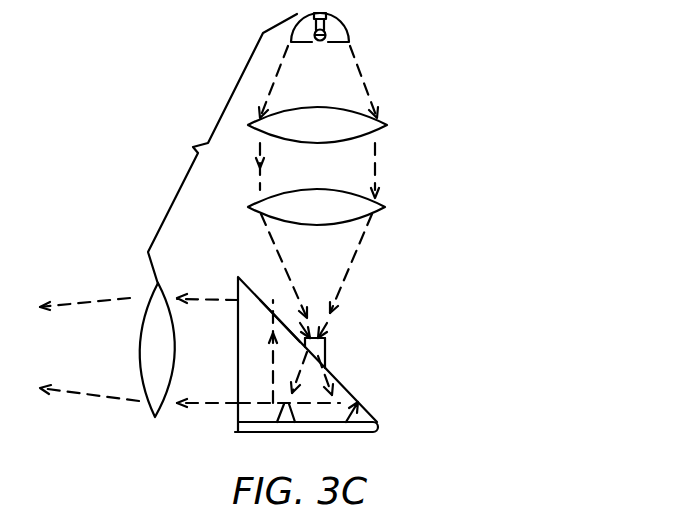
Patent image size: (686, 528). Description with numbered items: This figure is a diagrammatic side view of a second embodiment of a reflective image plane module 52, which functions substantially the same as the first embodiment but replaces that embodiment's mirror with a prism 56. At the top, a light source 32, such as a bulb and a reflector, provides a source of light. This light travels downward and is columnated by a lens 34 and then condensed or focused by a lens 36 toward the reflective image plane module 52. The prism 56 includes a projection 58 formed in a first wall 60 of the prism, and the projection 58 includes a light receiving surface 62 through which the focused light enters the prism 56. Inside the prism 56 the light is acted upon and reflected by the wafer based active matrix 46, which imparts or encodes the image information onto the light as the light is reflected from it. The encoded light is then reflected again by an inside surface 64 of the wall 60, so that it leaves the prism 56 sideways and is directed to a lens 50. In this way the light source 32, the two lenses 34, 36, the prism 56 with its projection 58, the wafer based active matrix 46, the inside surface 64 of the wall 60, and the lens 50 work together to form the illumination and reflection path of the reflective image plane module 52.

The light source 32 is at (350, 33).
The lens 34 is at (387, 125).
The lens 36 is at (385, 207).
The wafer based active matrix 46 is at (372, 433).
The lens 50 is at (155, 295).
The reflective image plane module 52 is at (398, 307).
The prism 56 is at (248, 386).
The projection 58 is at (326, 354).
The first wall 60 is at (370, 408).
The light receiving surface 62 is at (320, 335).
The inside surface 64 is at (282, 323).